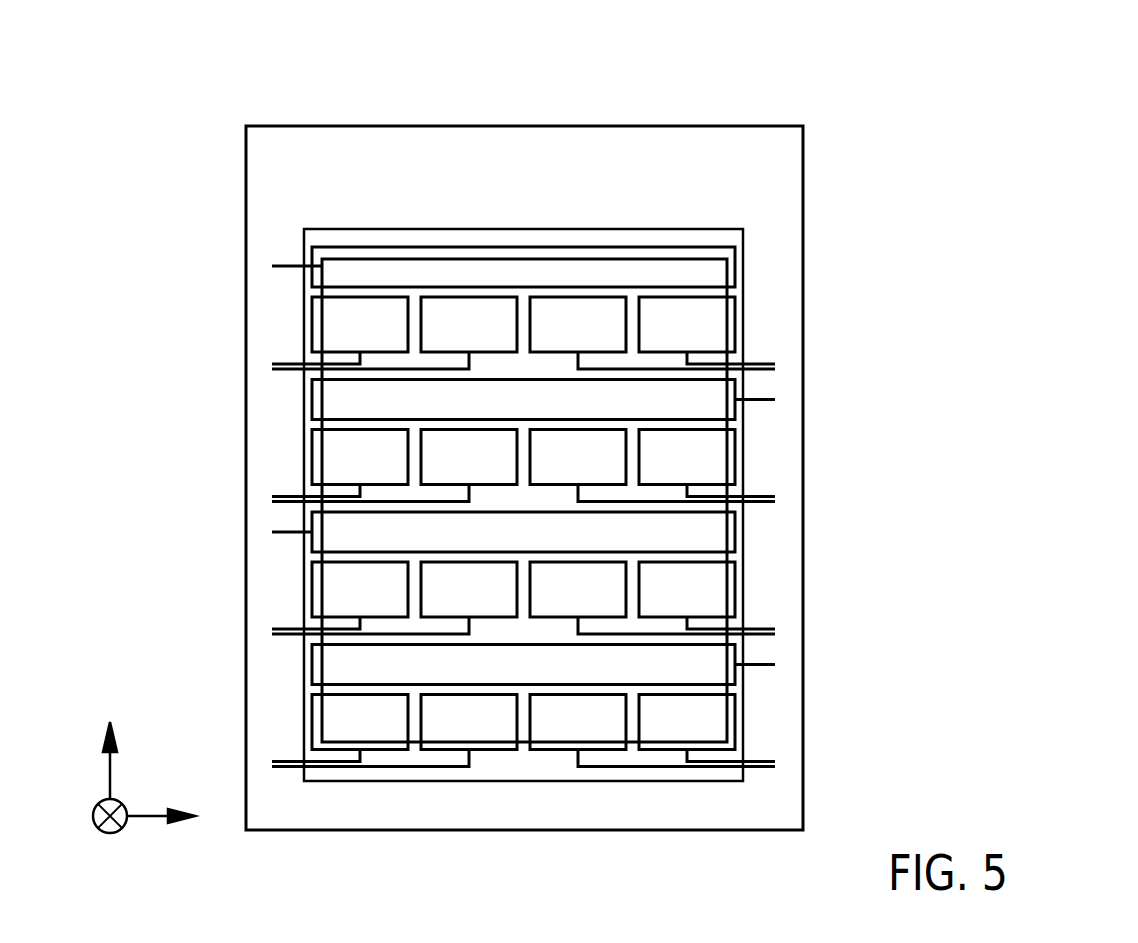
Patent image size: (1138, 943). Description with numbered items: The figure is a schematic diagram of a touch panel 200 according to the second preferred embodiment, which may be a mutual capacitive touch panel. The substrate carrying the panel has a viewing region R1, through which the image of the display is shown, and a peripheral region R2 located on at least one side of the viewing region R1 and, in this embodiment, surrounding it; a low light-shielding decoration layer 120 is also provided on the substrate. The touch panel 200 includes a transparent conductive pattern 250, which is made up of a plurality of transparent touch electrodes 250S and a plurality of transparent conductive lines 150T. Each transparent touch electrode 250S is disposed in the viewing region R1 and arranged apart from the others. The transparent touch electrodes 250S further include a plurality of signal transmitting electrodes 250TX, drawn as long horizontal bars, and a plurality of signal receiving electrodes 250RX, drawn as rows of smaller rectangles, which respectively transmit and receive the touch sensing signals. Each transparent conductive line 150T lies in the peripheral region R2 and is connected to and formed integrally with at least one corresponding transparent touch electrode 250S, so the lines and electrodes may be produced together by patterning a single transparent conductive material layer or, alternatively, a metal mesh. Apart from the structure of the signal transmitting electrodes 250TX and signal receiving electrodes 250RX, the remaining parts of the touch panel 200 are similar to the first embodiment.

The touch panel 200 is at (839, 79).
The low light-shielding decoration layer 120 is at (785, 795).
The viewing region R1 is at (613, 258).
The peripheral region R2 is at (803, 683).
The transparent conductive pattern 250 is at (1047, 295).
The transparent touch electrodes 250S is at (557, 481).
The signal transmitting electrodes 250TX is at (523, 494).
The signal receiving electrodes 250RX is at (523, 523).
The transparent conductive lines 150T is at (272, 266).